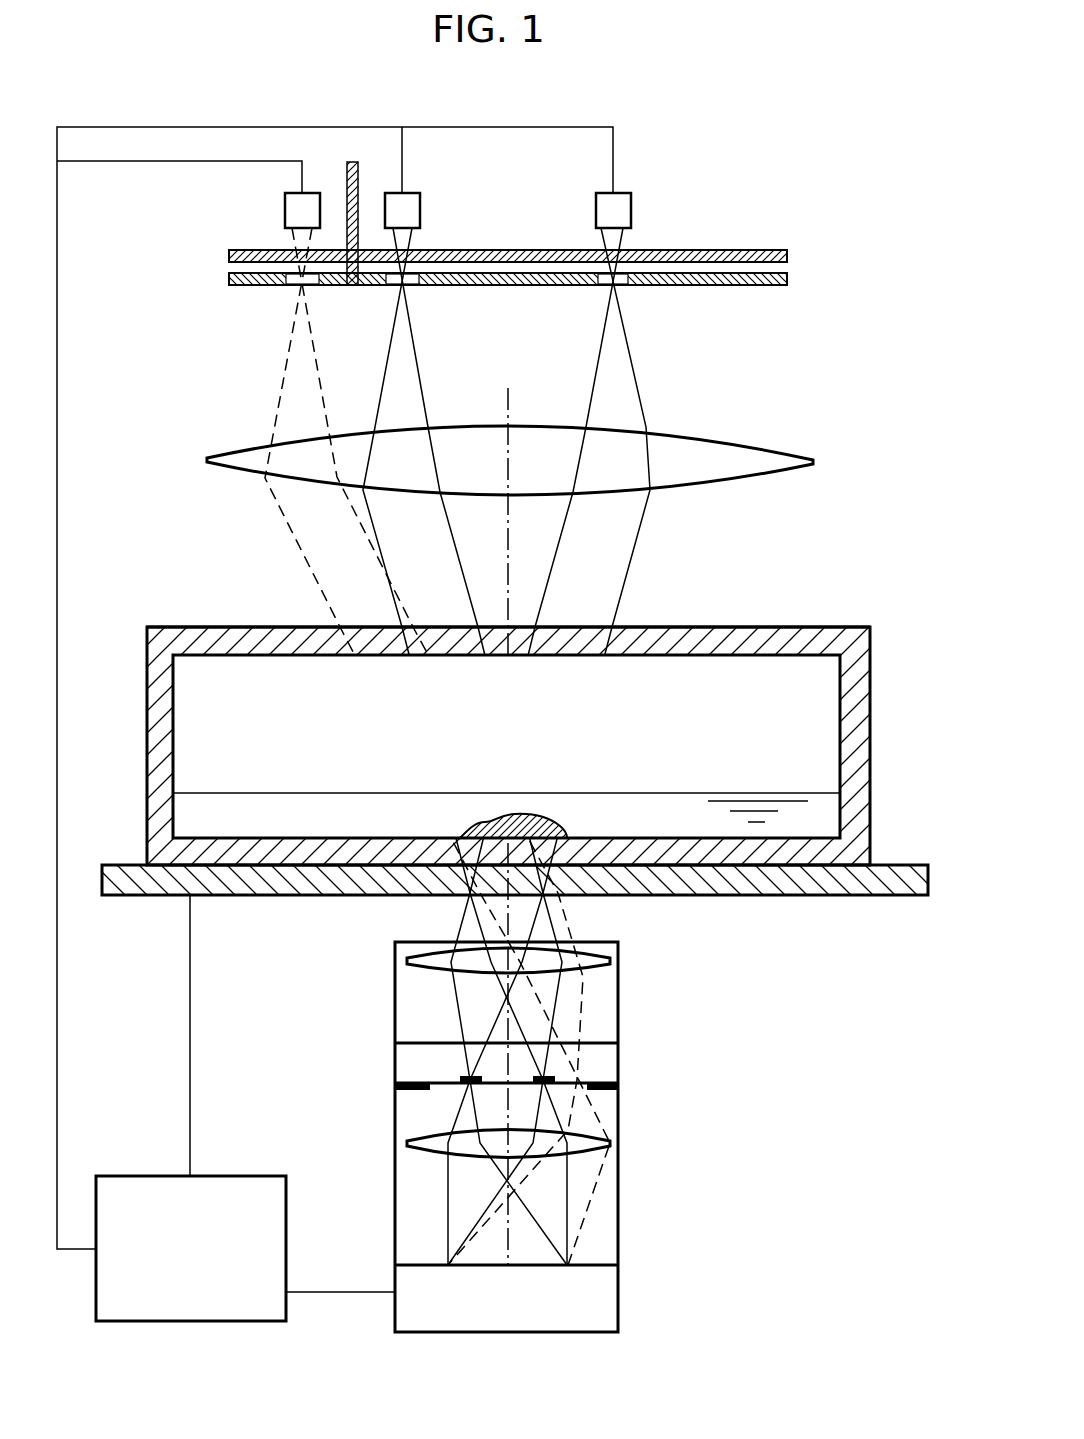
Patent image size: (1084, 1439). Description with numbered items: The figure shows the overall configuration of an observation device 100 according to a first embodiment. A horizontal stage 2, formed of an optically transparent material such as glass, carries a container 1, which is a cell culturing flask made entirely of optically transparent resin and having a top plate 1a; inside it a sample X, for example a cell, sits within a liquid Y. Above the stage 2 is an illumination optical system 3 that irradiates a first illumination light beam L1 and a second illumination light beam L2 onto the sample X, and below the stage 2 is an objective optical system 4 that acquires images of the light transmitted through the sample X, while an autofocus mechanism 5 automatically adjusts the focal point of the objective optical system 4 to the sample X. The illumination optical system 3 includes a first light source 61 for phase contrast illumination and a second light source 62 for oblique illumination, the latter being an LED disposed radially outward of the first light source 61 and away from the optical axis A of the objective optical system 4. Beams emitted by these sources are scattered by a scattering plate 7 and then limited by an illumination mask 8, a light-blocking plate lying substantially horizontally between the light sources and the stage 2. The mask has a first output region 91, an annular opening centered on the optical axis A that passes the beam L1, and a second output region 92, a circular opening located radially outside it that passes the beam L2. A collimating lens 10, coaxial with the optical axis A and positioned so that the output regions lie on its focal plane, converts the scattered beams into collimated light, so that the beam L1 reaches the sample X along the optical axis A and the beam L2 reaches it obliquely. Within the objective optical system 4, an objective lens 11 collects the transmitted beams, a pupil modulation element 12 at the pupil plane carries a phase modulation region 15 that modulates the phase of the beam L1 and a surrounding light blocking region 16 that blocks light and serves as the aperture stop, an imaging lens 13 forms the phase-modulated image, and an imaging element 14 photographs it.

The observation device 100 is at (889, 138).
The illumination optical system 3 is at (740, 226).
The first light source 61 is at (643, 185).
The second light source 62 is at (285, 209).
The scattering plate 7 is at (229, 256).
The illumination mask 8 is at (477, 307).
The first output region 91 is at (411, 286).
The second output region 92 is at (293, 286).
The first illumination light beam L1 is at (634, 368).
The second illumination light beam L2 is at (276, 380).
The optical axis A is at (510, 418).
The collimating lens 10 is at (815, 462).
The container 1 is at (548, 698).
The top plate 1a is at (773, 627).
The liquid Y is at (757, 793).
The sample X is at (540, 813).
The stage 2 is at (900, 865).
The objective optical system 4 is at (506, 1137).
The objective lens 11 is at (612, 958).
The pupil modulation element 12 is at (608, 1058).
The phase modulation region 15 is at (462, 1077).
The light blocking region 16 is at (397, 1097).
The imaging lens 13 is at (612, 1143).
The imaging element 14 is at (608, 1295).
The autofocus mechanism 5 is at (138, 1176).